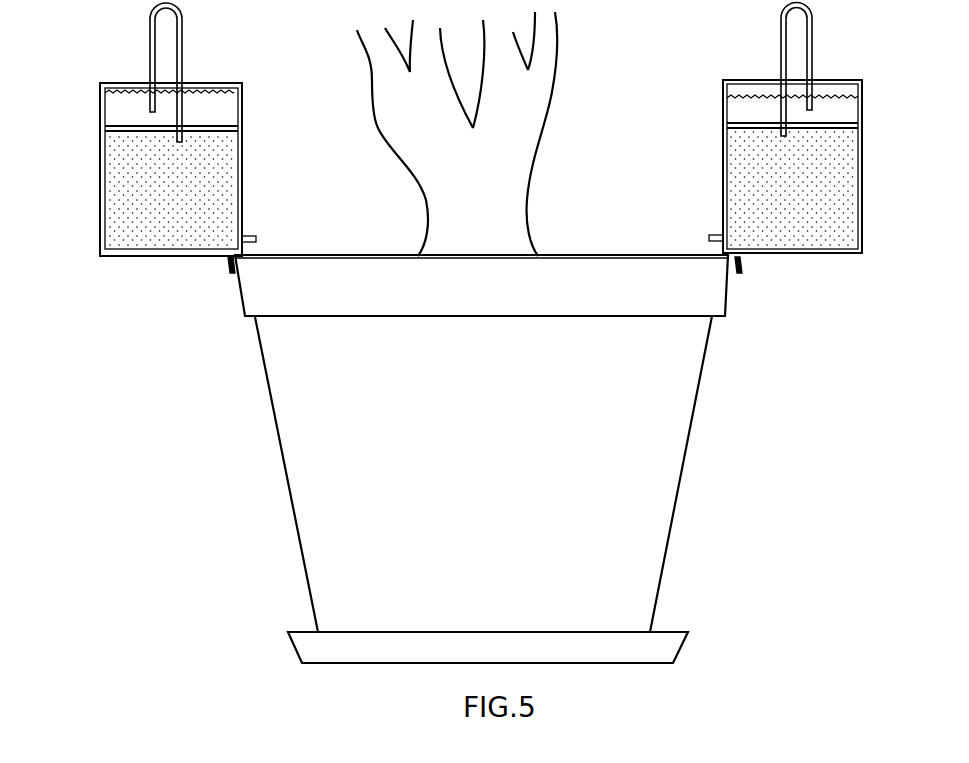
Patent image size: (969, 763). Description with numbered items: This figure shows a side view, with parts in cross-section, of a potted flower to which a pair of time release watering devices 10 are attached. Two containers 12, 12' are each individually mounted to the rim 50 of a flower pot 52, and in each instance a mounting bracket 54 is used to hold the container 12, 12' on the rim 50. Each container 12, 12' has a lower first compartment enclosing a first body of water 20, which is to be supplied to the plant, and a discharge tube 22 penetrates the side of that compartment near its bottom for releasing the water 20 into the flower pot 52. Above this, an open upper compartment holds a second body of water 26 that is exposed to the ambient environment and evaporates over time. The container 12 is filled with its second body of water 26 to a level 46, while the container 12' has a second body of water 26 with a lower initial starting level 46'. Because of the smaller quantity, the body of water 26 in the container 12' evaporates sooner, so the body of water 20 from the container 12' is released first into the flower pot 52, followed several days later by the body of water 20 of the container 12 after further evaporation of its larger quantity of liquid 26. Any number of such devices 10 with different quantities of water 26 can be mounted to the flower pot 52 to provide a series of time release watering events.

The automatic watering device 10 is at (78, 98).
The container 12 is at (195, 169).
The container 12' is at (734, 166).
The first liquid 20 is at (137, 197).
The discharge tube 22 is at (255, 237).
The second body of liquid 26 is at (122, 108).
The level of water 46 is at (191, 72).
The initial starting level 46' is at (762, 69).
The rim 50 is at (315, 297).
The flower pot 52 is at (318, 434).
The mounting bracket 54 is at (225, 262).